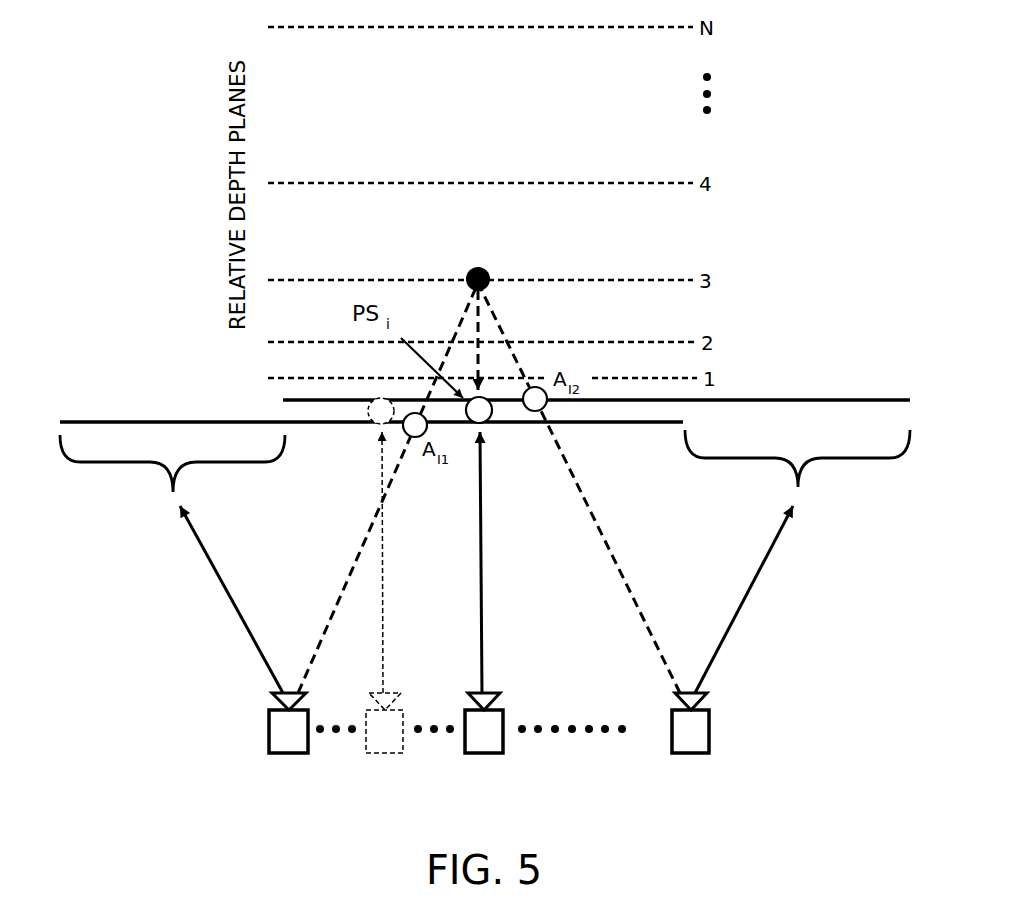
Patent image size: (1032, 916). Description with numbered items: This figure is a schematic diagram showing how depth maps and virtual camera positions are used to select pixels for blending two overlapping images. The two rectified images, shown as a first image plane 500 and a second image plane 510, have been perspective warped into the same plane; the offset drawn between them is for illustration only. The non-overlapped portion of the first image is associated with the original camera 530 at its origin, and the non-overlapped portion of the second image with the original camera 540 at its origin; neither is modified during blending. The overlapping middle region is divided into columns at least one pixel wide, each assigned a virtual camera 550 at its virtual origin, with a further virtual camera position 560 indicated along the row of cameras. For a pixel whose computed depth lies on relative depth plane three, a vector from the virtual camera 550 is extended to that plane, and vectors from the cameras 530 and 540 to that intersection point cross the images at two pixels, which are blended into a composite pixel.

The first rectified image plane 500 is at (100, 409).
The second rectified image plane 510 is at (839, 384).
The original camera 530 is at (268, 723).
The original camera 540 is at (709, 728).
The virtual camera 550 is at (502, 740).
The intermediate virtual camera position 560 is at (378, 753).